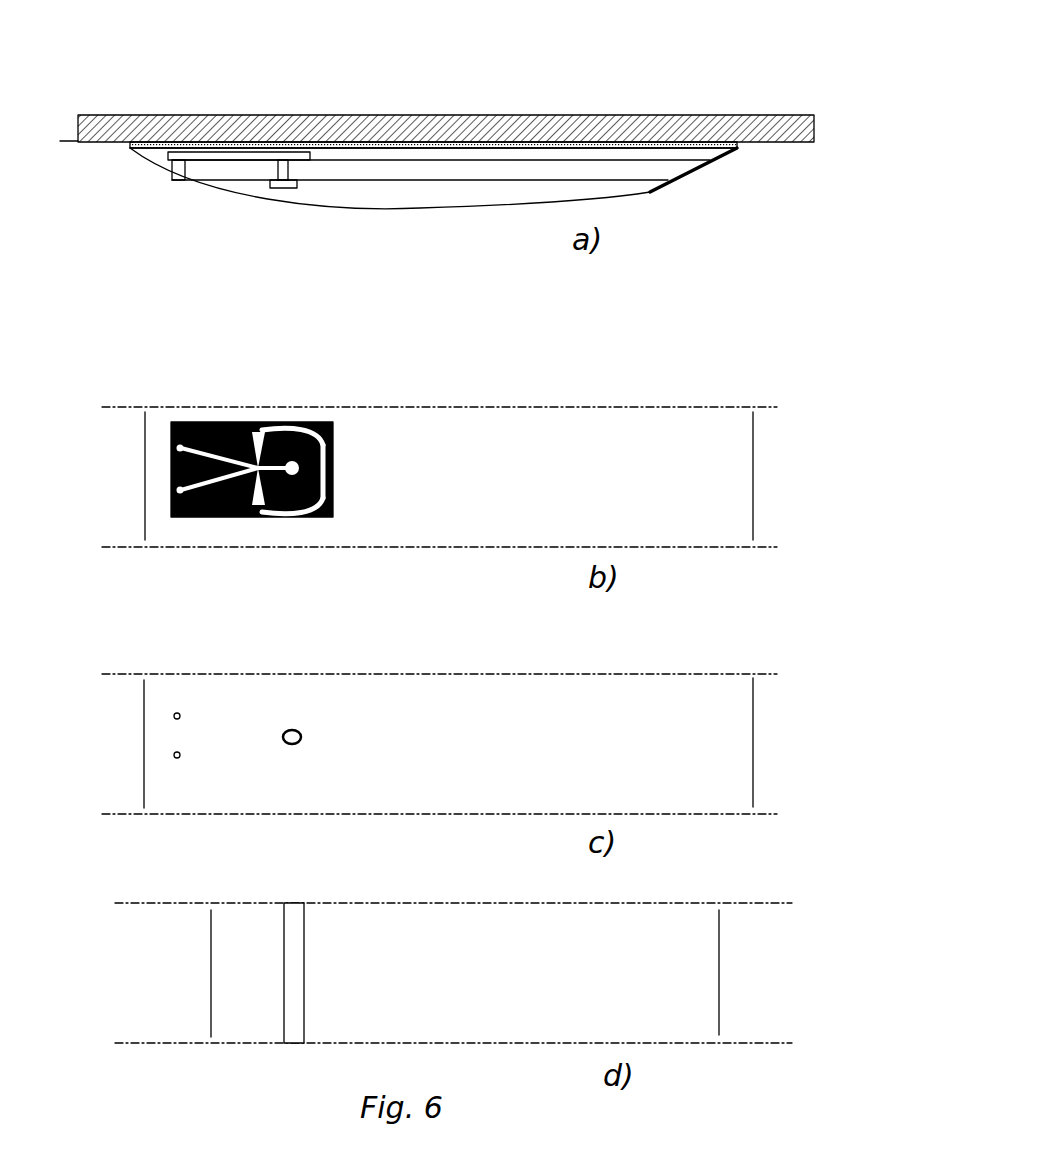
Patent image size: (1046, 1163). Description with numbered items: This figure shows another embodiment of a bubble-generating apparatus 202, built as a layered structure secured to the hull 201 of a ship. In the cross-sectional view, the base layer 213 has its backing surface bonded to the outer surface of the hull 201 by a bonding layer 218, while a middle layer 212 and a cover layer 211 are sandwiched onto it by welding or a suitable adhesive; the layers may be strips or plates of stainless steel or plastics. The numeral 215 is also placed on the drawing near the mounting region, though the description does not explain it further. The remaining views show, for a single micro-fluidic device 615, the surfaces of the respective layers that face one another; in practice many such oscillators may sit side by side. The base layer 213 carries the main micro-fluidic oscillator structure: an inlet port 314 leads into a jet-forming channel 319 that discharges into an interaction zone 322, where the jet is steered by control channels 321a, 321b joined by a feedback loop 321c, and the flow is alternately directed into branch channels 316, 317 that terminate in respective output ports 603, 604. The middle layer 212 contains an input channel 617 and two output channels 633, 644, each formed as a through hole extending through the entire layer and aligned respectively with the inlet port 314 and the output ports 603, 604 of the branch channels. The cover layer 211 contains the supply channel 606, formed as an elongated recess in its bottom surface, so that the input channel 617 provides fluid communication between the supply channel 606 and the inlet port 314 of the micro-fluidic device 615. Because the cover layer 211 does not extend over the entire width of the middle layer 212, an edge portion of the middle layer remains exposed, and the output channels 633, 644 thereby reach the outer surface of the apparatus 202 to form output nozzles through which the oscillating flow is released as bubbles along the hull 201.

The hull 201 is at (437, 92).
The apparatus 202 is at (735, 207).
The cover layer 211 is at (453, 595).
The middle layer 212 is at (439, 448).
The base layer 213 is at (439, 309).
The mounting surface 215 is at (841, 80).
The bonding layer 218 is at (433, 110).
The inlet port 314 is at (353, 449).
The branch channel 316 is at (161, 418).
The branch channel 317 is at (233, 525).
The jet-forming channel 319 is at (322, 525).
The control channel 321a is at (356, 391).
The control channel 321b is at (329, 557).
The feedback loop 321c is at (388, 439).
The interaction zone 322 is at (203, 408).
The output port 603 is at (117, 475).
The output port 604 is at (132, 534).
The supply channel 606 is at (292, 611).
The micro-fluidic device 615 is at (206, 279).
The input channel 617 is at (281, 452).
The output channel 633 is at (117, 465).
The output channel 644 is at (130, 798).